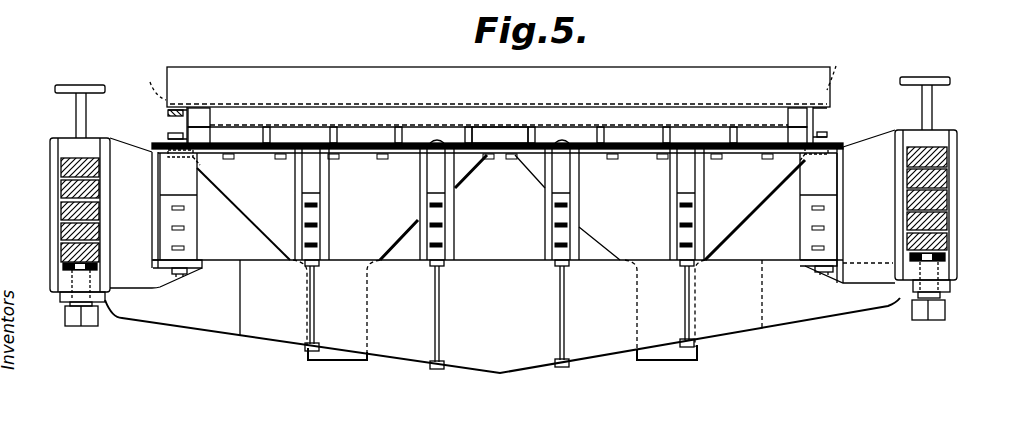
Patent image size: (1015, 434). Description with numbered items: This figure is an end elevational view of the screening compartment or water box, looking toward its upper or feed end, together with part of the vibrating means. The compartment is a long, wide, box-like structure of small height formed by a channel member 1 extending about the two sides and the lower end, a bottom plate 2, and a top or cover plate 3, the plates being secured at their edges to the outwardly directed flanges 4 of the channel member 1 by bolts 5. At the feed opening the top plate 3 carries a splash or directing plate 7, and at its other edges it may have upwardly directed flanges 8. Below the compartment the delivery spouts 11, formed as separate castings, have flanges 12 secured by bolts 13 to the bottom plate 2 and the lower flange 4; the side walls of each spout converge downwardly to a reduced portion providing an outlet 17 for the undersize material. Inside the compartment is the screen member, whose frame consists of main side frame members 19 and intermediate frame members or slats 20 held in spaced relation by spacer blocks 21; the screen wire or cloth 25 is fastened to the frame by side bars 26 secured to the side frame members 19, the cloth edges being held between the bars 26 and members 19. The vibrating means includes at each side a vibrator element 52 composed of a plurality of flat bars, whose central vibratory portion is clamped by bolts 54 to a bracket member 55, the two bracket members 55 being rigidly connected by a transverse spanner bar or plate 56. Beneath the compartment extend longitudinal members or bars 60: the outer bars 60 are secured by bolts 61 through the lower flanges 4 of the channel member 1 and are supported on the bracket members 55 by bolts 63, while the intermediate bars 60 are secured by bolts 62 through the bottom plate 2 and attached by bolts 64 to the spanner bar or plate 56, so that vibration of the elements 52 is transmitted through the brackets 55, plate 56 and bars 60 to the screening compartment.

The channel member 1 is at (185, 122).
The bottom plate 2 is at (358, 150).
The top or cover plate 3 is at (374, 104).
The outwardly directed flange 4 is at (175, 110).
The bolt 5 is at (180, 110).
The splash or directing plate 7 is at (430, 78).
The upwardly directed flange 8 is at (493, 76).
The delivery spout 11 is at (273, 232).
The flange 12 is at (255, 158).
The bolt 13 is at (511, 160).
The outlet 17 is at (331, 360).
The main side frame member 19 is at (207, 137).
The intermediate frame member or slat 20 is at (332, 128).
The spacer block 21 is at (278, 133).
The screen wire or cloth 25 is at (500, 130).
The side bar 26 is at (200, 112).
The vibrator element 52 is at (63, 233).
The bolt 54 is at (92, 323).
The bracket member 55 is at (78, 108).
The transverse spanner bar or plate 56 is at (607, 352).
The longitudinally extending member or bar 60 is at (195, 216).
The bolt 61 is at (172, 232).
The bolt 62 is at (318, 243).
The bolt 63 is at (178, 276).
The bolt 64 is at (440, 324).